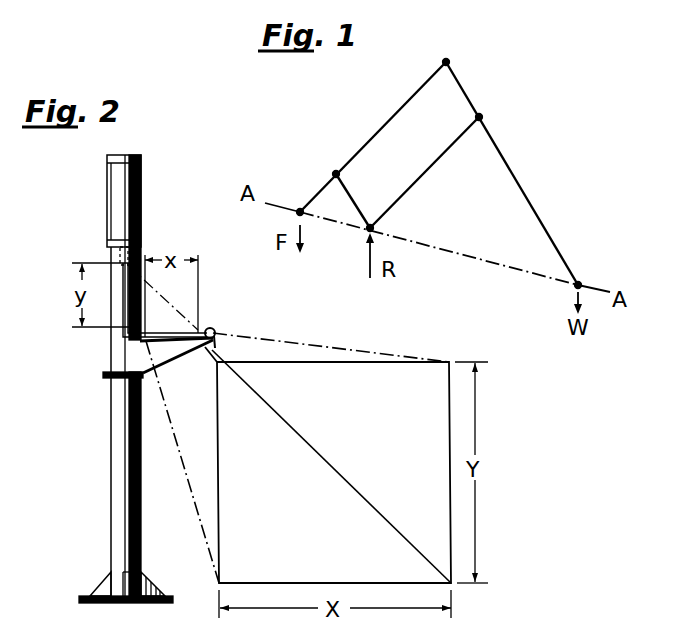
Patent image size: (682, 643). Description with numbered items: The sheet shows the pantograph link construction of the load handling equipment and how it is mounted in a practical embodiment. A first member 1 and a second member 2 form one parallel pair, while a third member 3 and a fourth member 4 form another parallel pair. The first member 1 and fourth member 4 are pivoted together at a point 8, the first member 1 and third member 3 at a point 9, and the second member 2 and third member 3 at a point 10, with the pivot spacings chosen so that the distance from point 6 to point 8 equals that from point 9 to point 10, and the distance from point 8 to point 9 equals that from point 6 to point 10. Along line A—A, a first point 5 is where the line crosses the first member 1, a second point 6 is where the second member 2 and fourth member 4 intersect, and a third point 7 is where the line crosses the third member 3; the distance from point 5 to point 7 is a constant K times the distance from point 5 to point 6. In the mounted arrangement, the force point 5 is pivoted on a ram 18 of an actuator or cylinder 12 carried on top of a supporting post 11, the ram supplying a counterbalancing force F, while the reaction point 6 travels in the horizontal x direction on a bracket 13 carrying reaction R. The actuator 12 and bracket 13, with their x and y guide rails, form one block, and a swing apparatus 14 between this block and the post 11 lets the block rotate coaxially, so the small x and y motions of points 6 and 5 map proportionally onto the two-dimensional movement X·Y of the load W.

In FIG. 1, the first member 1 is at (387, 120).
In FIG. 1, the second member 2 is at (412, 188).
In FIG. 1, the third member 3 is at (528, 198).
In FIG. 1, the fourth member 4 is at (345, 194).
In FIG. 1, the first point 5 is at (298, 208).
In FIG. 1, the second point 6 is at (367, 232).
In FIG. 1, the third point 7 is at (575, 288).
In FIG. 1, the pivot point 8 is at (333, 170).
In FIG. 1, the pivot point 9 is at (448, 60).
In FIG. 1, the pivot point 10 is at (482, 115).
In FIG. 2, the supporting post 11 is at (118, 477).
In FIG. 2, the actuator or cylinder 12 is at (142, 190).
In FIG. 2, the bracket 13 is at (168, 353).
In FIG. 2, the swing apparatus 14 is at (108, 377).
In FIG. 2, the ram 18 is at (122, 257).